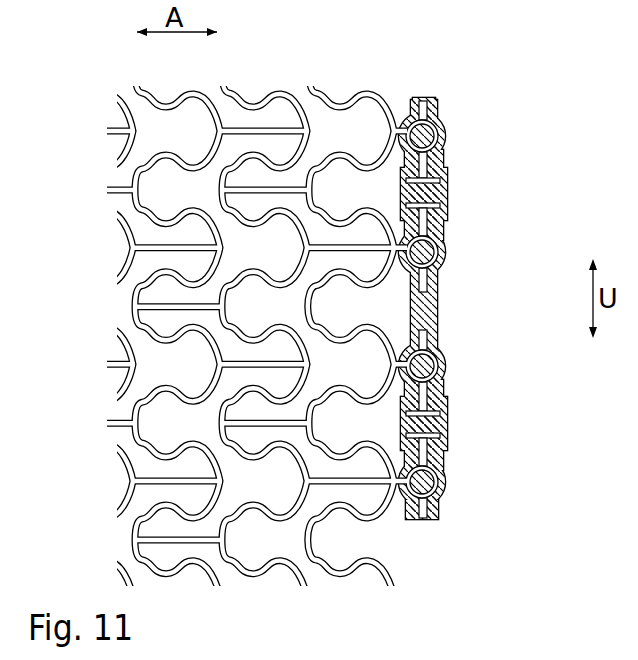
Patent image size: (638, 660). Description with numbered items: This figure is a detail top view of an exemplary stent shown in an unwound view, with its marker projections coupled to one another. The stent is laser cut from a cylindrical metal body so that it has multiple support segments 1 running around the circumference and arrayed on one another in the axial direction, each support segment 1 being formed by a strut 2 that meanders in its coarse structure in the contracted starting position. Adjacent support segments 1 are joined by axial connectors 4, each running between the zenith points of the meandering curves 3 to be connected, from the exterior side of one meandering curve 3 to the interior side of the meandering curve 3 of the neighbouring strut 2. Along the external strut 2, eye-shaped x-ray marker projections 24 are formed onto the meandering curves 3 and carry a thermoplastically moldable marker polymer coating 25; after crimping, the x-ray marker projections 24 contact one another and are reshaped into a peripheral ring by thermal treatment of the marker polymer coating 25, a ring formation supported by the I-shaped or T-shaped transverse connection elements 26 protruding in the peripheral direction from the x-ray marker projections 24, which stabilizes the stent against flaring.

The support segment 1 is at (264, 80).
The strut 2 is at (374, 88).
The meandering curve 3 is at (333, 568).
The axial connector 4 is at (158, 540).
The x-ray marker projection 24 is at (438, 116).
The marker polymer coating 25 is at (444, 148).
The transverse connection element 26 is at (440, 289).